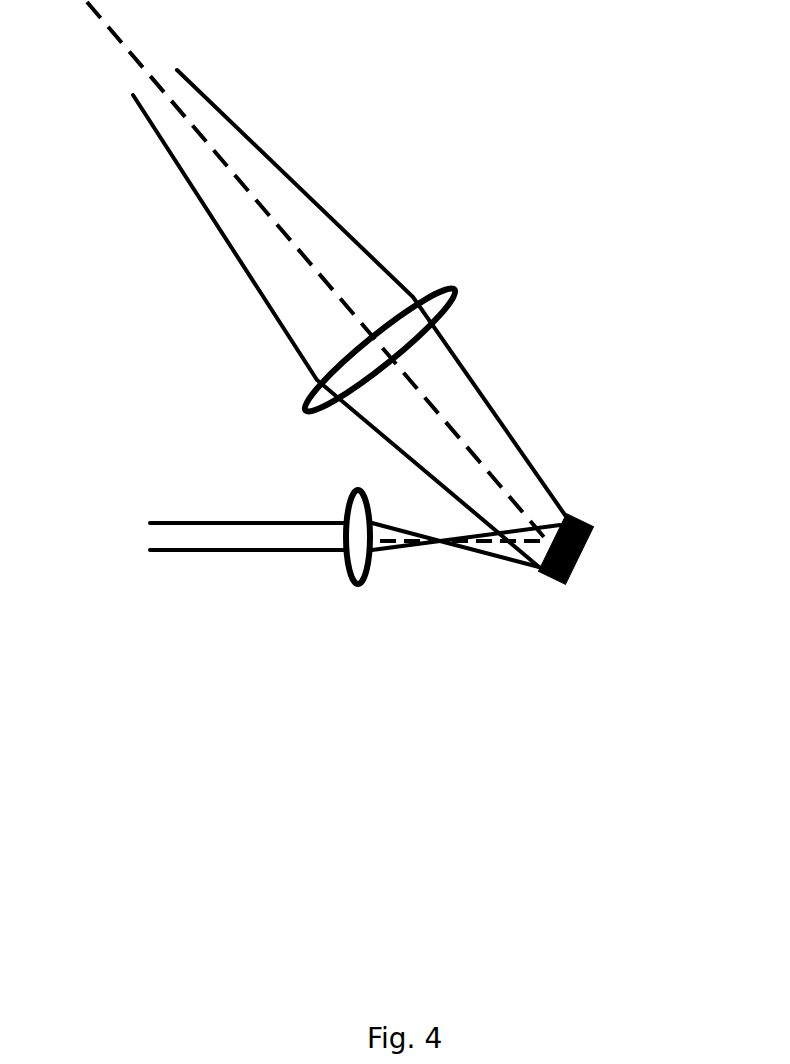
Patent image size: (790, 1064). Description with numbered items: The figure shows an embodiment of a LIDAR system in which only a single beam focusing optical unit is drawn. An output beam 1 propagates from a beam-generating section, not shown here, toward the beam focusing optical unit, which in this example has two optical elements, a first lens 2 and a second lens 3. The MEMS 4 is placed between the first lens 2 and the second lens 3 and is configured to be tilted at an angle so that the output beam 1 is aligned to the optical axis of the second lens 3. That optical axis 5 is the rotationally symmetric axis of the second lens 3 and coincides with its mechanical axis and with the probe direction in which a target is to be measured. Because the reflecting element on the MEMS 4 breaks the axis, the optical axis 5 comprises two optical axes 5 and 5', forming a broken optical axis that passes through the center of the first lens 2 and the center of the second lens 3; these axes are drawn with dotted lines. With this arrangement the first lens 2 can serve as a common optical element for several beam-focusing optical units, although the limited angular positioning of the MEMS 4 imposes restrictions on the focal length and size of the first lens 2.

The output beam 1 is at (232, 537).
The first lens 2 is at (358, 585).
The second lens 3 is at (443, 287).
The MEMS 4 is at (588, 541).
The optical axis 5 is at (295, 272).
The optical axis 5' is at (463, 591).